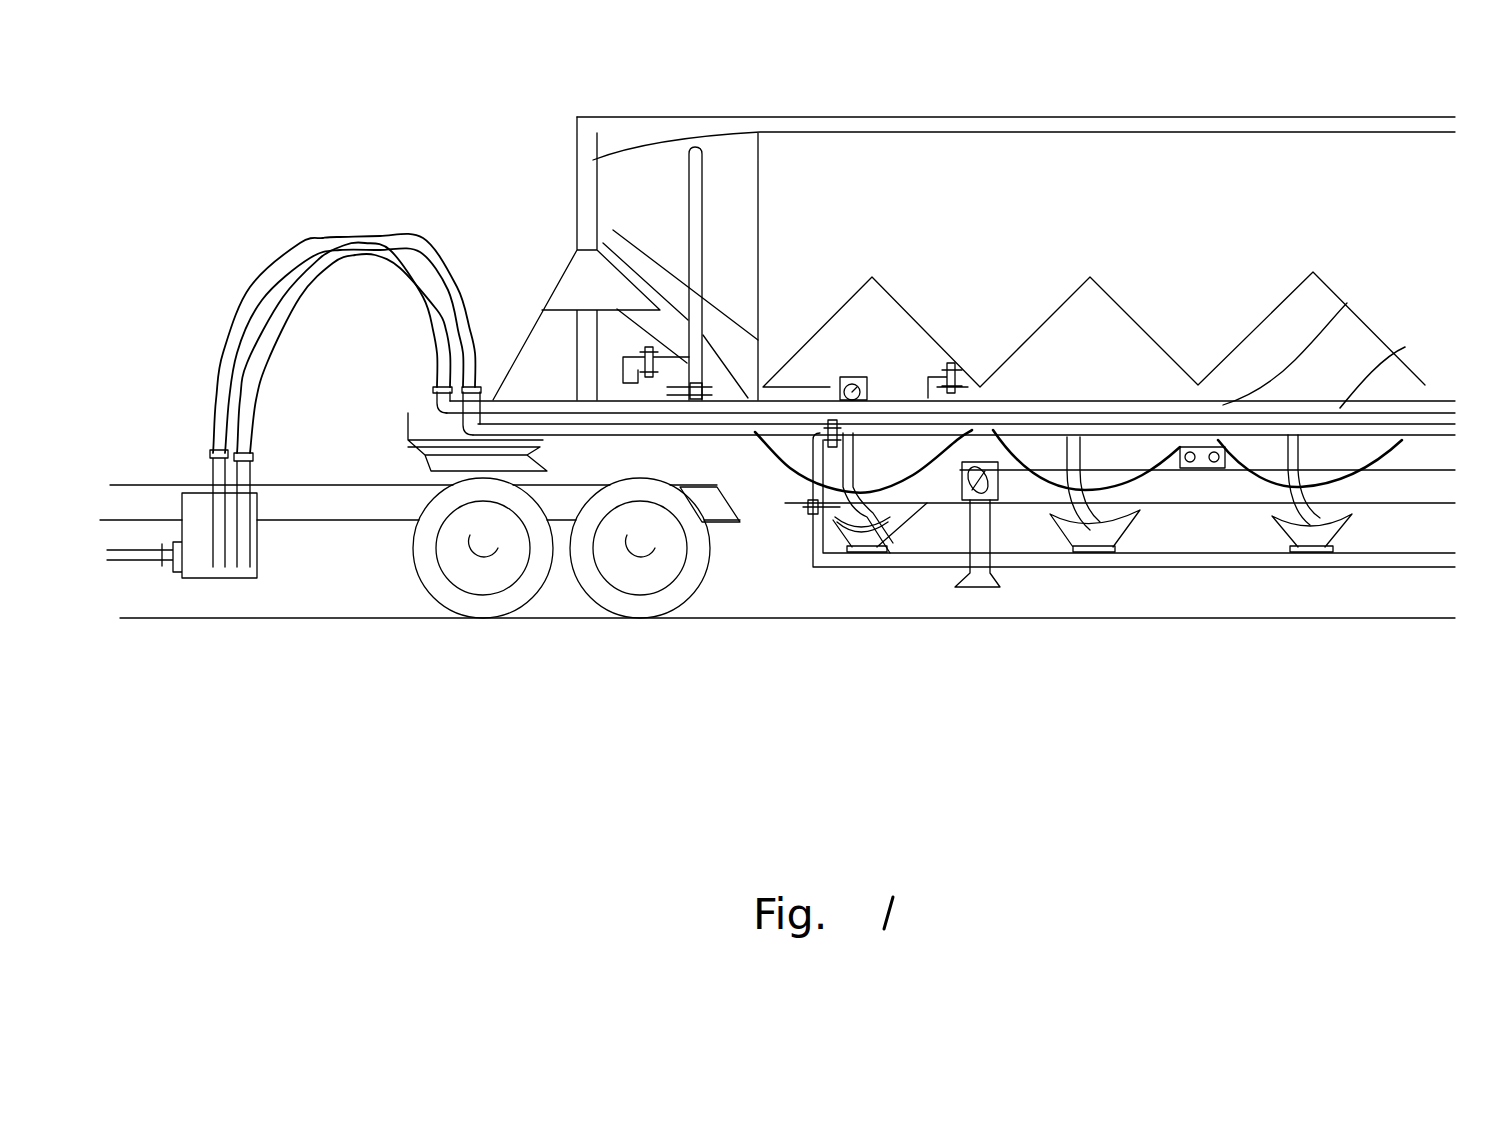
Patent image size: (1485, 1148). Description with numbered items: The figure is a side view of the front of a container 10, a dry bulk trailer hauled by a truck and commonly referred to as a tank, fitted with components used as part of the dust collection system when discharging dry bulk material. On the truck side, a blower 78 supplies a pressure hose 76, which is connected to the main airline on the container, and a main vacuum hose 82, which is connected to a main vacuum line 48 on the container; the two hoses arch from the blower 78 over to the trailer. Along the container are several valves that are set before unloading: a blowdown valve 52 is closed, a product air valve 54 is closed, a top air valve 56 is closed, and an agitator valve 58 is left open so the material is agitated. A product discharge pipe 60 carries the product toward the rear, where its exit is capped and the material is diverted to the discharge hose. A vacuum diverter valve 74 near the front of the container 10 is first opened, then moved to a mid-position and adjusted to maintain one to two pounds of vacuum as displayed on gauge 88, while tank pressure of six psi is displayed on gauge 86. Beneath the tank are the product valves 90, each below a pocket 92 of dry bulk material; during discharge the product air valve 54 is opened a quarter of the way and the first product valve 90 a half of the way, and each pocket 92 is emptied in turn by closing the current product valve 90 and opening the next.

The container 10 is at (1113, 148).
The main vacuum line 48 is at (1349, 304).
The blowdown valve 52 is at (660, 357).
The product air valve 54 is at (810, 508).
The top air valve 56 is at (698, 392).
The agitator valve 58 is at (826, 425).
The product discharge pipe 60 is at (1405, 347).
The vacuum diverter valve 74 is at (973, 363).
The pressure hose 76 is at (342, 240).
The blower 78 is at (200, 527).
The main vacuum hose 82 is at (277, 268).
The gauge 86 is at (1202, 468).
The gauge 88 is at (872, 378).
The product valve 90 is at (1335, 532).
The pocket 92 is at (923, 507).